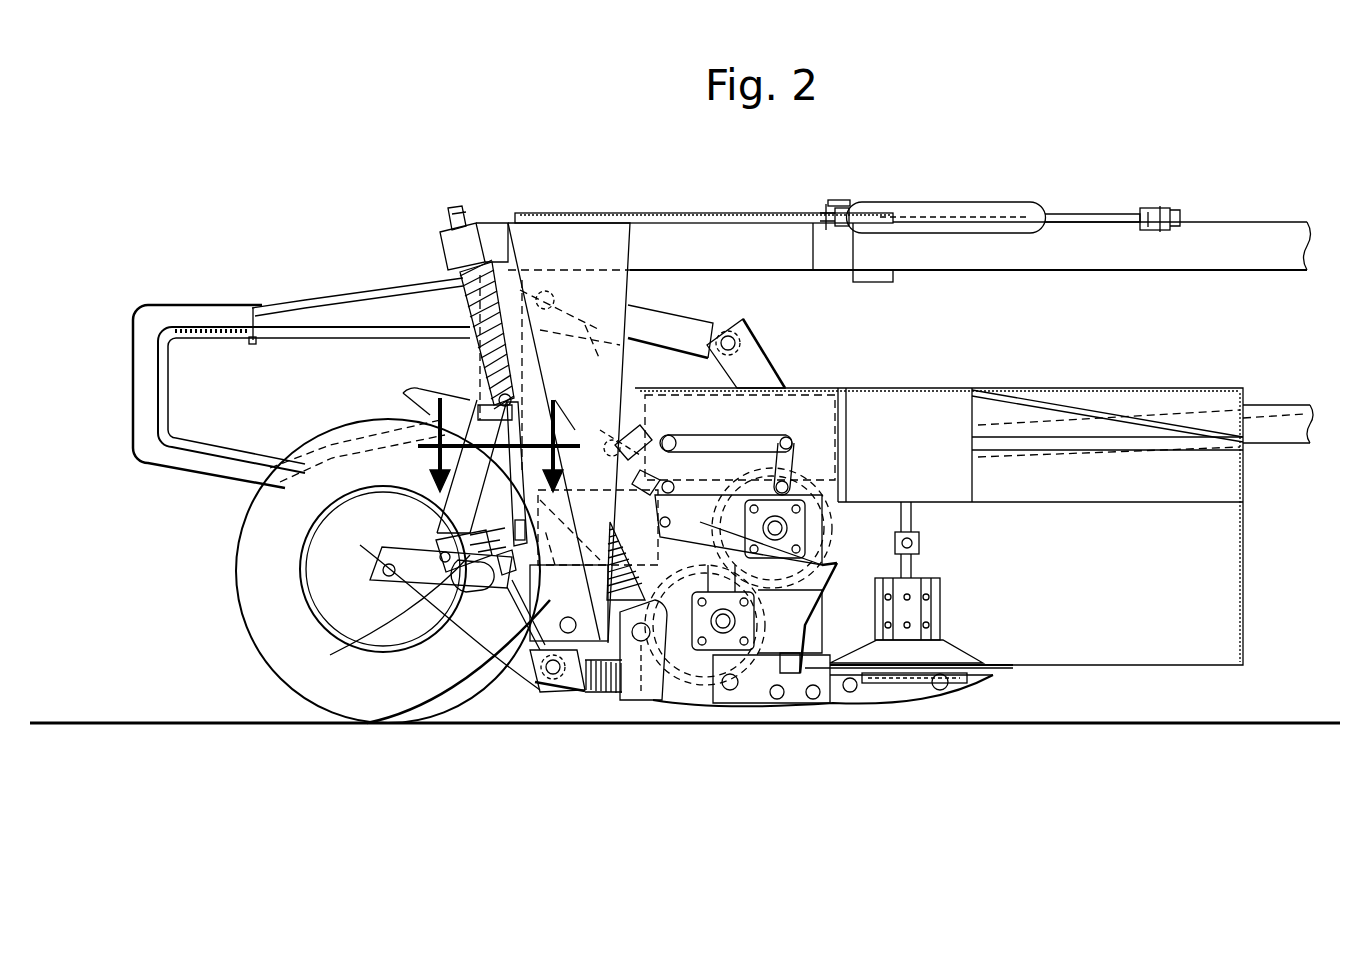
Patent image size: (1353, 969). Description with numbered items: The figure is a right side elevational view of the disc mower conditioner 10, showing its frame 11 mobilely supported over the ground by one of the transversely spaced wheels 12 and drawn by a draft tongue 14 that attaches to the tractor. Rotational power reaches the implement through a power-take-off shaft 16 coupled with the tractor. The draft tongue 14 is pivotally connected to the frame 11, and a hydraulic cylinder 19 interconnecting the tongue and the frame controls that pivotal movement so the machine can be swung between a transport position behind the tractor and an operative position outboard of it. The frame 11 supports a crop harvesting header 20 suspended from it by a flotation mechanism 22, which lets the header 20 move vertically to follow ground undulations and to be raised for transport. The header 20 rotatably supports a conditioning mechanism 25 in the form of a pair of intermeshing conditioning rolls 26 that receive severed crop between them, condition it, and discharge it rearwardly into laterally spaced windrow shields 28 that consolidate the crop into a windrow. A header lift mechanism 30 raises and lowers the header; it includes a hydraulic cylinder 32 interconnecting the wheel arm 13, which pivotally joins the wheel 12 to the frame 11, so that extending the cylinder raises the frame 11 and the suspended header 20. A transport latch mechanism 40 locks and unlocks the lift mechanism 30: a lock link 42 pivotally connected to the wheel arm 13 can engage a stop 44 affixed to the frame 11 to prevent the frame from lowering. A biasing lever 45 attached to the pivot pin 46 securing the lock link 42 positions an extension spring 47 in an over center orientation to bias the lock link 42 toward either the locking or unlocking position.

The disc mower conditioner 10 is at (300, 112).
The frame 11 is at (567, 240).
The wheel 12 is at (248, 630).
The wheel arm 13 is at (353, 655).
The draft tongue 14 is at (1248, 262).
The power-take-off shaft 16 is at (1272, 407).
The hydraulic cylinder 19 is at (957, 206).
The crop harvesting header 20 is at (952, 360).
The flotation mechanism 22 is at (458, 280).
The conditioning mechanism 25 is at (697, 690).
The conditioning rolls 26 is at (790, 630).
The windrow shields 28 is at (228, 308).
The header lift mechanism 30 is at (380, 525).
The hydraulic cylinder 32 is at (497, 523).
The transport latch mechanism 40 is at (505, 640).
The lock link 42 is at (460, 495).
The stop 44 is at (507, 640).
The biasing lever 45 is at (490, 600).
The pivot pin 46 is at (520, 595).
The extension spring 47 is at (455, 565).